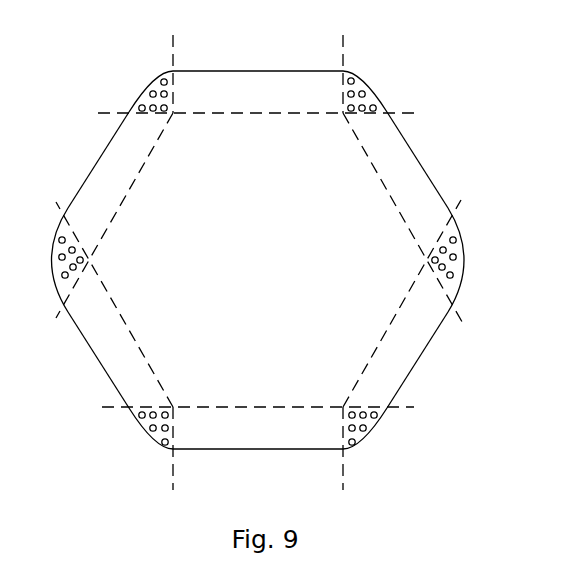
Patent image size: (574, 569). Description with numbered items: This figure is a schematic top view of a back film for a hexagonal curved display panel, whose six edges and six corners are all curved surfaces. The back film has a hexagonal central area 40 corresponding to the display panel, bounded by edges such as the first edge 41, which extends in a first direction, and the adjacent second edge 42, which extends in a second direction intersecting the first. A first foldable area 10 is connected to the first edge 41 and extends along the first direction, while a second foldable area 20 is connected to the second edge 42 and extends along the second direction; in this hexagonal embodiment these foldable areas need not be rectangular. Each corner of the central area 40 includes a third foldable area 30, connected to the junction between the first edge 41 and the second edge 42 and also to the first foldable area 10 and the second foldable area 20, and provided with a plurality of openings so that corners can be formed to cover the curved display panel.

The first foldable area 10 is at (231, 81).
The second foldable area 20 is at (398, 158).
The third foldable area 30 is at (362, 84).
The central area 40 is at (272, 374).
The first edge 41 is at (263, 124).
The second edge 42 is at (362, 178).